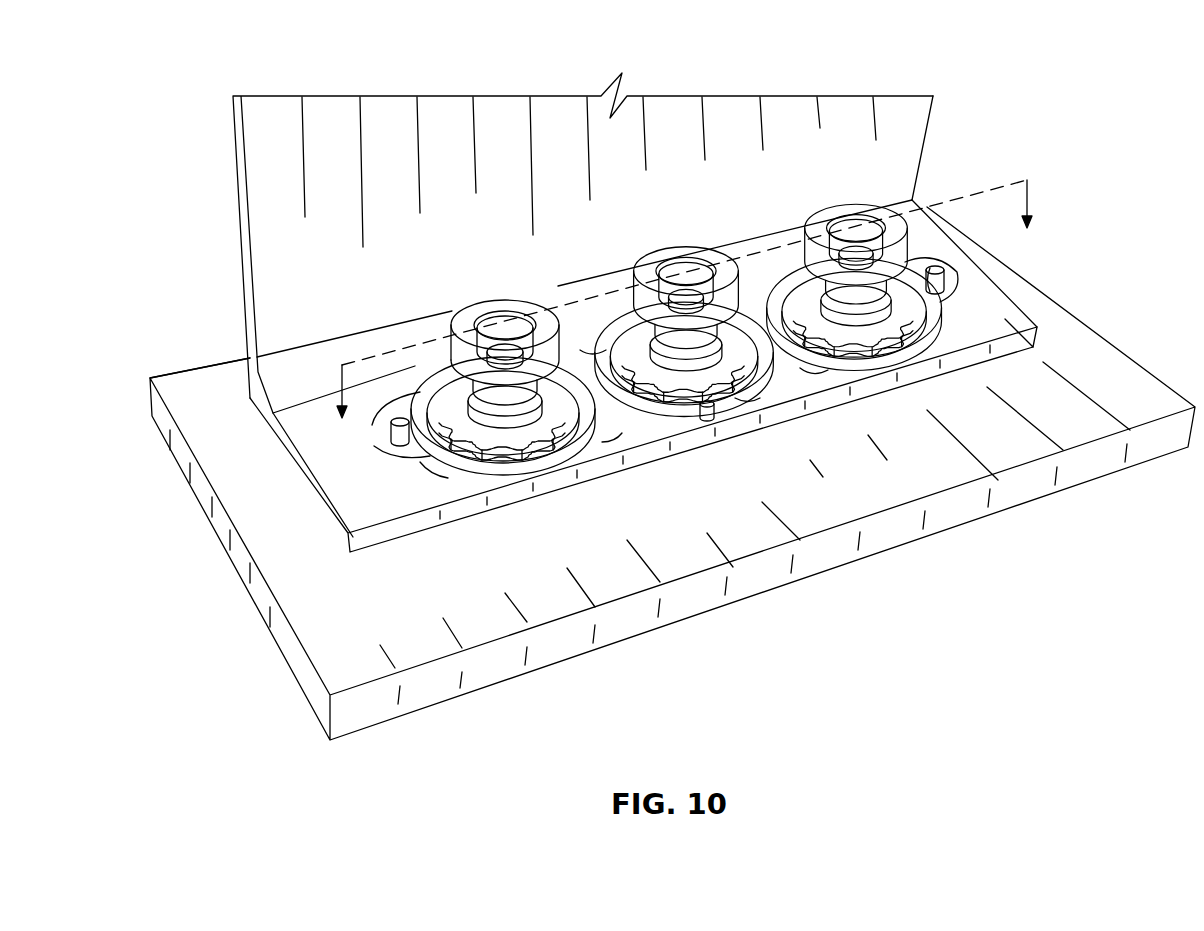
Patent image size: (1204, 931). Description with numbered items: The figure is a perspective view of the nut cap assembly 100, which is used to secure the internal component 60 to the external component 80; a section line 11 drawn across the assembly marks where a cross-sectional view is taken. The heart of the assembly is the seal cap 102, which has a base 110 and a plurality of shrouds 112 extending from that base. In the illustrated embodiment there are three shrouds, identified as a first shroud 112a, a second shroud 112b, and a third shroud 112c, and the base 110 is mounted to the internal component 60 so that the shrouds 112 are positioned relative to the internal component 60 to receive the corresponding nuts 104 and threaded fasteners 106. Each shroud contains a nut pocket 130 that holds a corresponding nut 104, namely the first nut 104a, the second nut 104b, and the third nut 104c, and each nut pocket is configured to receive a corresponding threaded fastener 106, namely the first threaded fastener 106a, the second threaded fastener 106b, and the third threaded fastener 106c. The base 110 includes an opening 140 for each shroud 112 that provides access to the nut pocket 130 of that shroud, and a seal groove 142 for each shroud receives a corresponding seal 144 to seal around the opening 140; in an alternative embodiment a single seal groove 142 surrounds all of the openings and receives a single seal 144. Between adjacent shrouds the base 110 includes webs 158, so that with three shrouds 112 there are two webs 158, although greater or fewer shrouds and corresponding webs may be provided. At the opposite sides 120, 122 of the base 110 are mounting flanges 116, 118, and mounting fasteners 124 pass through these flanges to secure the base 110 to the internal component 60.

The nut cap assembly 100 is at (771, 162).
The seal cap 102 is at (908, 200).
The nut 104 is at (410, 372).
The first nut 104a is at (465, 471).
The second nut 104b is at (794, 404).
The third nut 104c is at (956, 319).
The threaded fastener 106 is at (438, 334).
The first threaded fastener 106a is at (500, 338).
The second threaded fastener 106b is at (686, 268).
The third threaded fastener 106c is at (888, 243).
The base 110 is at (622, 433).
The shroud 112 is at (446, 334).
The first shroud 112a is at (463, 327).
The second shroud 112b is at (722, 272).
The third shroud 112c is at (820, 235).
The mounting flange 116 is at (420, 462).
The mounting flange 118 is at (930, 267).
The side 120 is at (328, 468).
The side 122 is at (1038, 346).
The mounting fastener 124 is at (400, 440).
The nut pocket 130 is at (497, 445).
The opening 140 is at (515, 445).
The seal groove 142 is at (707, 410).
The seal 144 is at (743, 400).
The web 158 is at (590, 352).
The internal component 60 is at (690, 376).
The external component 80 is at (1133, 390).
The section line 11 is at (687, 317).